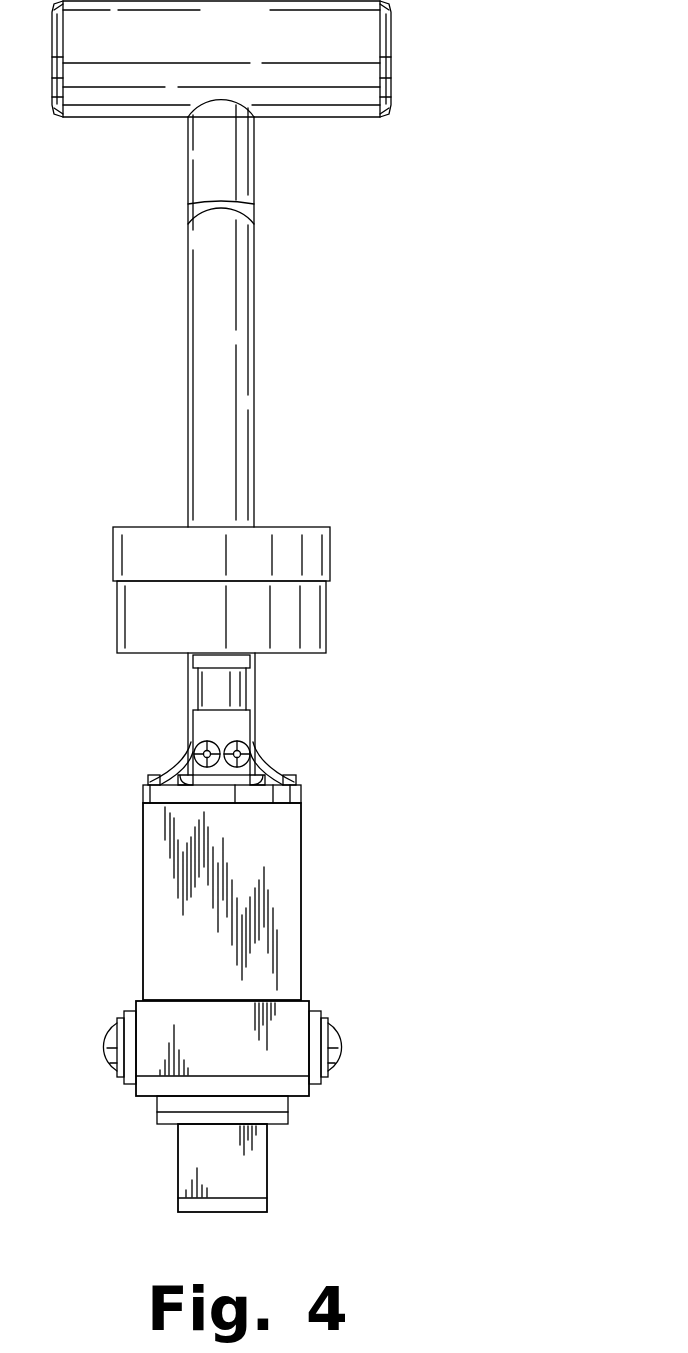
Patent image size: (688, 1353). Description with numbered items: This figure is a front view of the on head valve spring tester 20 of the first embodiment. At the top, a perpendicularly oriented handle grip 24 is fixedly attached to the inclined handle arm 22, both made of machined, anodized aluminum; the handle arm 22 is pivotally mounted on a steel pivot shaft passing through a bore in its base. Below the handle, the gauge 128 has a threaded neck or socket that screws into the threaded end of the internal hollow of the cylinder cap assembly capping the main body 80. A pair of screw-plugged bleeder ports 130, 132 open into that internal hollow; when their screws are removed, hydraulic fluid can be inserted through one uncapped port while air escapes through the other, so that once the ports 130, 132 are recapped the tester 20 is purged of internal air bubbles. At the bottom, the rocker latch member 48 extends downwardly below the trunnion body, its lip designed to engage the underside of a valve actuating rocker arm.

The on head valve spring tester 20 is at (462, 378).
The handle arm 22 is at (245, 452).
The handle grip 24 is at (328, 105).
The rocker latch member 48 is at (190, 1165).
The main body 80 is at (150, 925).
The gauge 128 is at (318, 628).
The bleeder port 130 is at (193, 748).
The bleeder port 132 is at (252, 748).